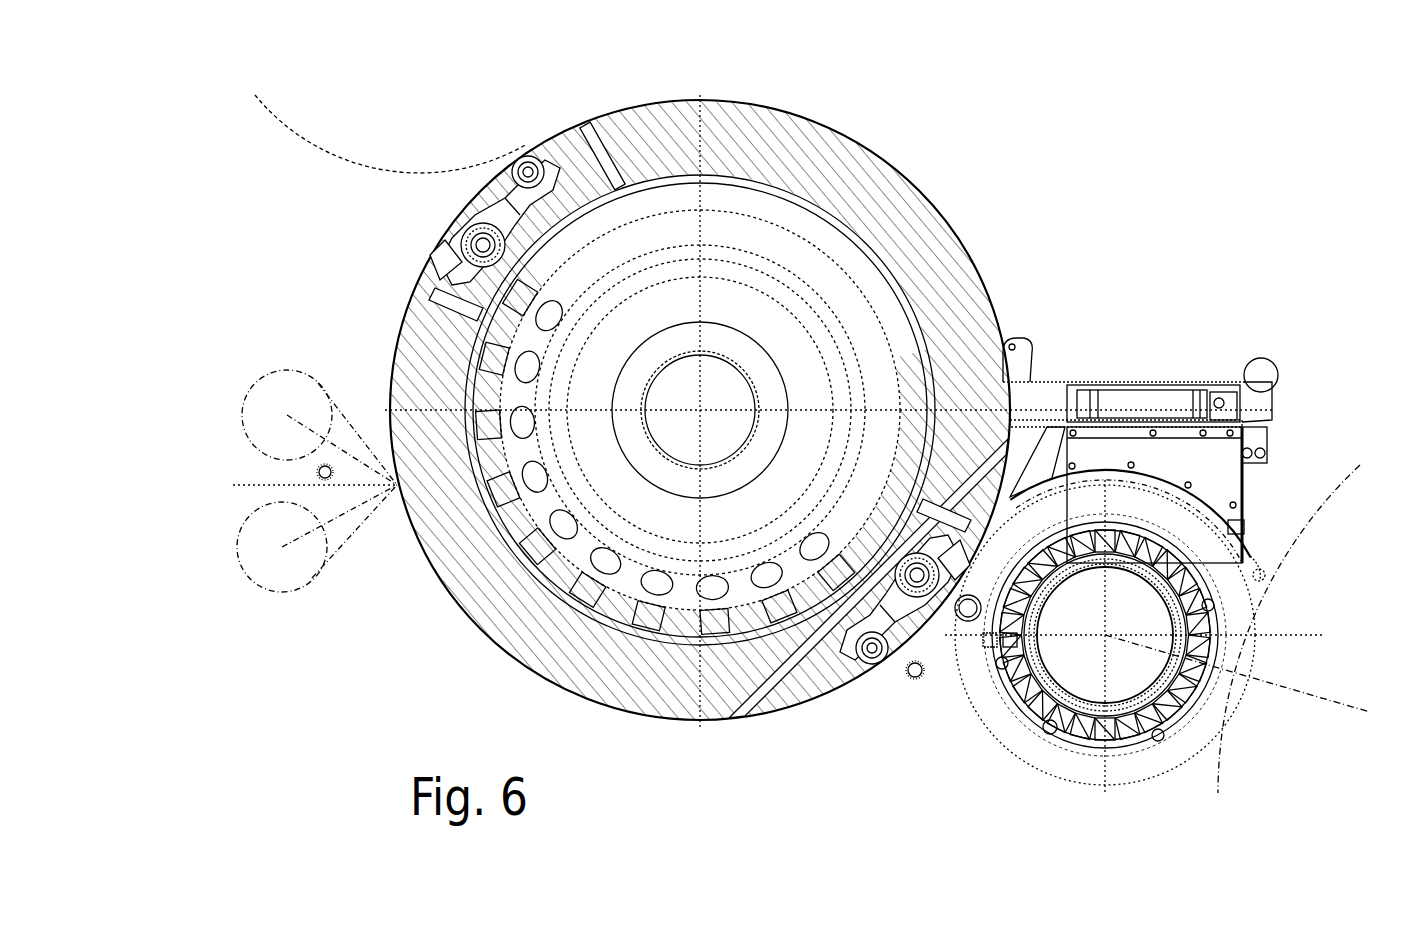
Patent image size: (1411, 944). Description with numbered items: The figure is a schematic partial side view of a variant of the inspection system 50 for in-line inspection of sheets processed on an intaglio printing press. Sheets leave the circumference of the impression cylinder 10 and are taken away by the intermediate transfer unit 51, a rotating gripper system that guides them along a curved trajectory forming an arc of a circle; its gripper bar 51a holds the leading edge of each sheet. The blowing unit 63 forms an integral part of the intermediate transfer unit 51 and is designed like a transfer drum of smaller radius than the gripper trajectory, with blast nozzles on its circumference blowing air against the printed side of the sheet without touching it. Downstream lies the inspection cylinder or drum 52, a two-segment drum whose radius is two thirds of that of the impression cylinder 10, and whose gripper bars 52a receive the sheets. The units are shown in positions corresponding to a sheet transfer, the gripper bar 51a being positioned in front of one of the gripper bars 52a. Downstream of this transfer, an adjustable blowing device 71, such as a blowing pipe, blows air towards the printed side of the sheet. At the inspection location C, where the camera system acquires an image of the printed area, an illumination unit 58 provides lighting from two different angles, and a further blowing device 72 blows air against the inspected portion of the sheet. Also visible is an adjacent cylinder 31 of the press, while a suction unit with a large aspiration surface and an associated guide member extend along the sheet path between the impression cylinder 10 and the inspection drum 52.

The inspection system 50 is at (1092, 214).
The inspection cylinder or drum 52 is at (410, 328).
The gripper bars 52a is at (433, 256).
The adjacent drum 31 is at (348, 157).
The illumination unit 58 is at (265, 383).
The inspection location C is at (398, 488).
The blowing device 72 is at (325, 466).
The impression cylinder 10 is at (1373, 505).
The intermediate transfer unit 51 is at (999, 763).
The blowing unit 63 is at (1180, 688).
The gripper bar 51a is at (963, 583).
The blowing device 71 is at (913, 679).